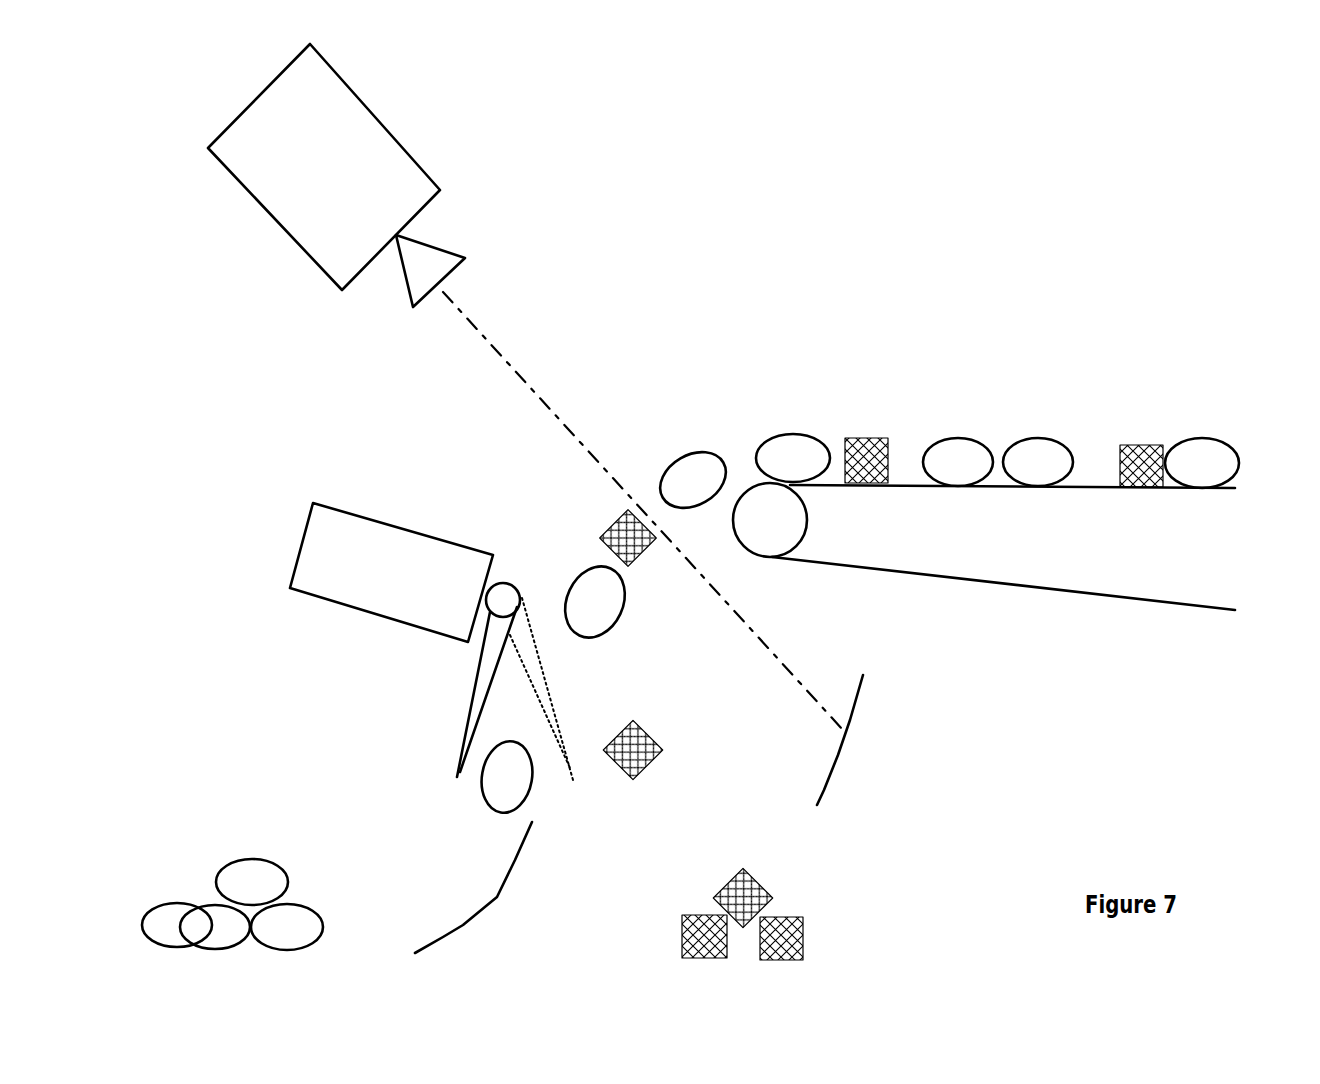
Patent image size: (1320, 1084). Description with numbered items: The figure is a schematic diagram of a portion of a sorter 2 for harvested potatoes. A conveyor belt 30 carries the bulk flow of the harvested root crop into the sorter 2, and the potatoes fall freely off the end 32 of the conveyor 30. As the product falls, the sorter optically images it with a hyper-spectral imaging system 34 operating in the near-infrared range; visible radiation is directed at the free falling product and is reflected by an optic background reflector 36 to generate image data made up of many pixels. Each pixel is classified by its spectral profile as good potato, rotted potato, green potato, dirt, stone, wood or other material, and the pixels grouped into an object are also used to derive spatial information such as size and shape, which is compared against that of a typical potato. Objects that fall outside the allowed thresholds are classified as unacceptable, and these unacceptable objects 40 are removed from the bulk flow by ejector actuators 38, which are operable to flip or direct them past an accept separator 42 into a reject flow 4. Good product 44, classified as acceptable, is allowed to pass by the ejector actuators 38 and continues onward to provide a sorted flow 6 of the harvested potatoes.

The sorter 2 is at (795, 254).
The reject flow 4 is at (645, 749).
The sorted flow 6 is at (492, 692).
The conveyor belt 30 is at (1180, 422).
The end of the conveyor 32 is at (770, 520).
The camera / sensor unit 34 is at (525, 387).
The optic background reflector 36 is at (864, 740).
The ejector actuators 38 is at (391, 562).
The unacceptable objects 40 is at (759, 907).
The accept separator 42 is at (473, 887).
The good product 44 is at (232, 880).